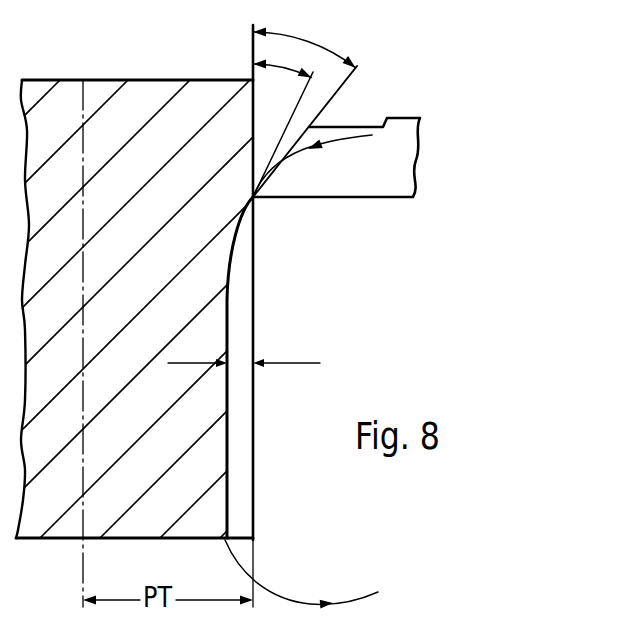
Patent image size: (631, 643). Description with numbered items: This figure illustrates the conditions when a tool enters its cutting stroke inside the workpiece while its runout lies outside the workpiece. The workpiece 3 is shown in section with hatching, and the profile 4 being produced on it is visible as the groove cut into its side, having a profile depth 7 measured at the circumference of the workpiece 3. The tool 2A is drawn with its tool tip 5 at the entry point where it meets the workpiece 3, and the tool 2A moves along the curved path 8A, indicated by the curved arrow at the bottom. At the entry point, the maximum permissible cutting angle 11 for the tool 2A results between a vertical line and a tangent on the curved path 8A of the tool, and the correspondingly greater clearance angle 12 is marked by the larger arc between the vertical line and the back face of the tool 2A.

The workpiece 3 is at (43, 510).
The profile 4 is at (205, 515).
The tool tip 5 is at (257, 200).
The profile depth 7 is at (237, 362).
The cutting angle 11 is at (277, 67).
The clearance angle 12 is at (310, 40).
The tool 2A is at (372, 173).
The curved path 8A is at (298, 602).